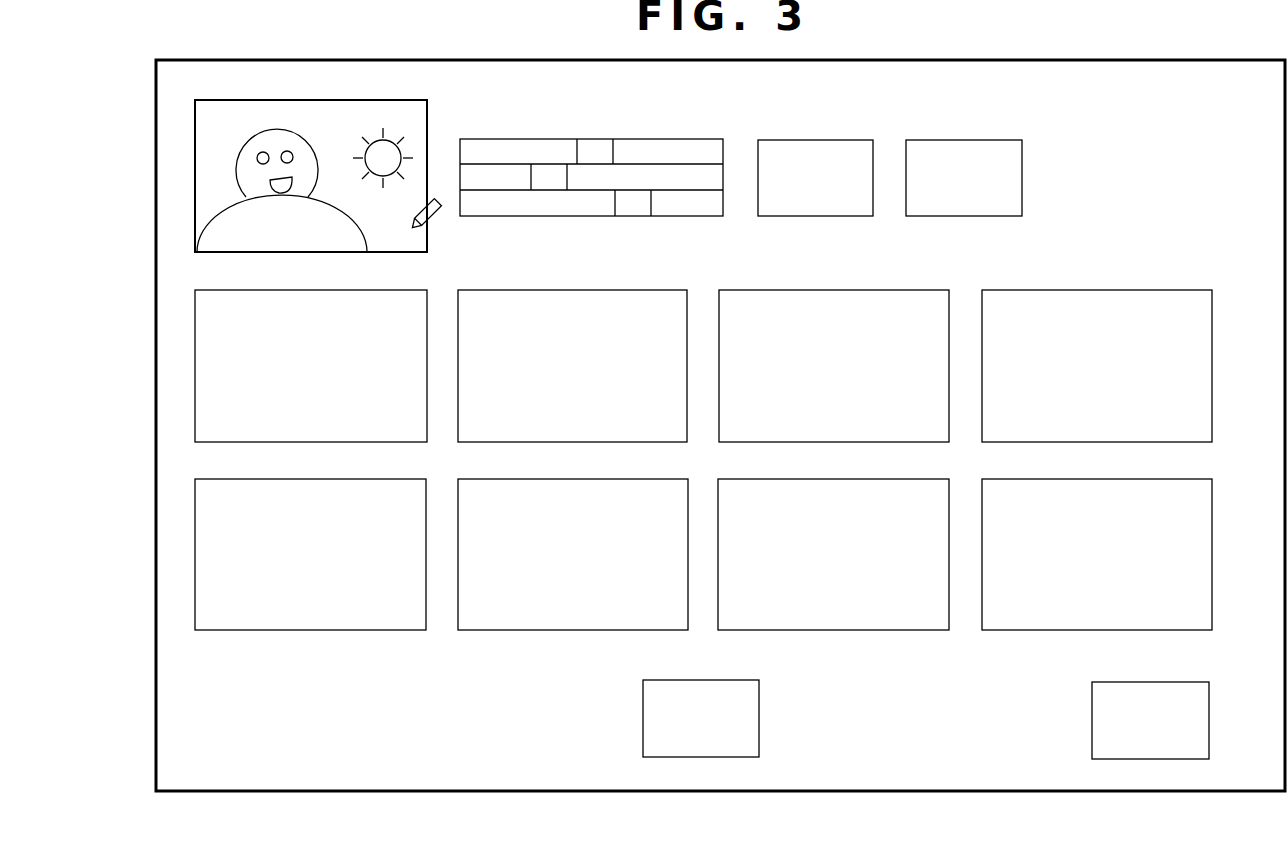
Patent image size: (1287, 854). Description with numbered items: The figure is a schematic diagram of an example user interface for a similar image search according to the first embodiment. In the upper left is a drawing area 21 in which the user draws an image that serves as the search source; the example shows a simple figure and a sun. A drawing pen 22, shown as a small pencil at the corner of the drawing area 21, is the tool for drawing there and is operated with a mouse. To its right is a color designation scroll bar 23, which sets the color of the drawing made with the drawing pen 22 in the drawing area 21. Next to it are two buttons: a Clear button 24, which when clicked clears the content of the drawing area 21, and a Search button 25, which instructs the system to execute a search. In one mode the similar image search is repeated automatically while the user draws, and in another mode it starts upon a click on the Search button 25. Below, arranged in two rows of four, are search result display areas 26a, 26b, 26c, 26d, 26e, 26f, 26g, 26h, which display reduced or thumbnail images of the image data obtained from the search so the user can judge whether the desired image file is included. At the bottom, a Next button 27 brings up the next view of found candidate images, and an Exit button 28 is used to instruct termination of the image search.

The drawing area 21 is at (400, 99).
The drawing pen 22 is at (432, 218).
The color designation scroll bar 23 is at (695, 139).
The Clear button 24 is at (857, 140).
The Search button 25 is at (1005, 140).
The search result display area 26a is at (384, 442).
The search result display area 26b is at (644, 442).
The search result display area 26c is at (907, 442).
The search result display area 26d is at (1170, 442).
The search result display area 26e is at (383, 630).
The search result display area 26f is at (645, 630).
The search result display area 26g is at (907, 630).
The search result display area 26h is at (1170, 630).
The Next button 27 is at (759, 716).
The Exit button 28 is at (1092, 719).